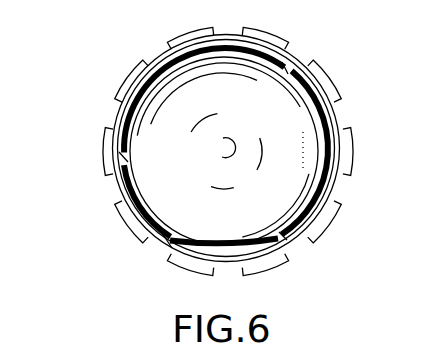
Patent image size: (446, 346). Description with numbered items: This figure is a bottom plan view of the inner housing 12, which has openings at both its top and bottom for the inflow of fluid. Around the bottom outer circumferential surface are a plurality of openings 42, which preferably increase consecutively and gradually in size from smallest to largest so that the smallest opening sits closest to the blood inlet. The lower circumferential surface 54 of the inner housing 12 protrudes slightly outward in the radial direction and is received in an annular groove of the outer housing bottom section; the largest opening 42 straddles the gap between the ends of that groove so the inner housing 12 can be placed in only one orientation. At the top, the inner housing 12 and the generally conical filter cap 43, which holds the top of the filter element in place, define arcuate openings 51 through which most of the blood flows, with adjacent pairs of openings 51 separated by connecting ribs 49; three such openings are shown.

The inner housing 12 is at (100, 222).
The openings 42 is at (300, 53).
The lower circumferential surface 54 is at (334, 73).
The filter cap 43 is at (288, 173).
The connecting ribs 49 is at (284, 68).
The openings 51 is at (166, 243).